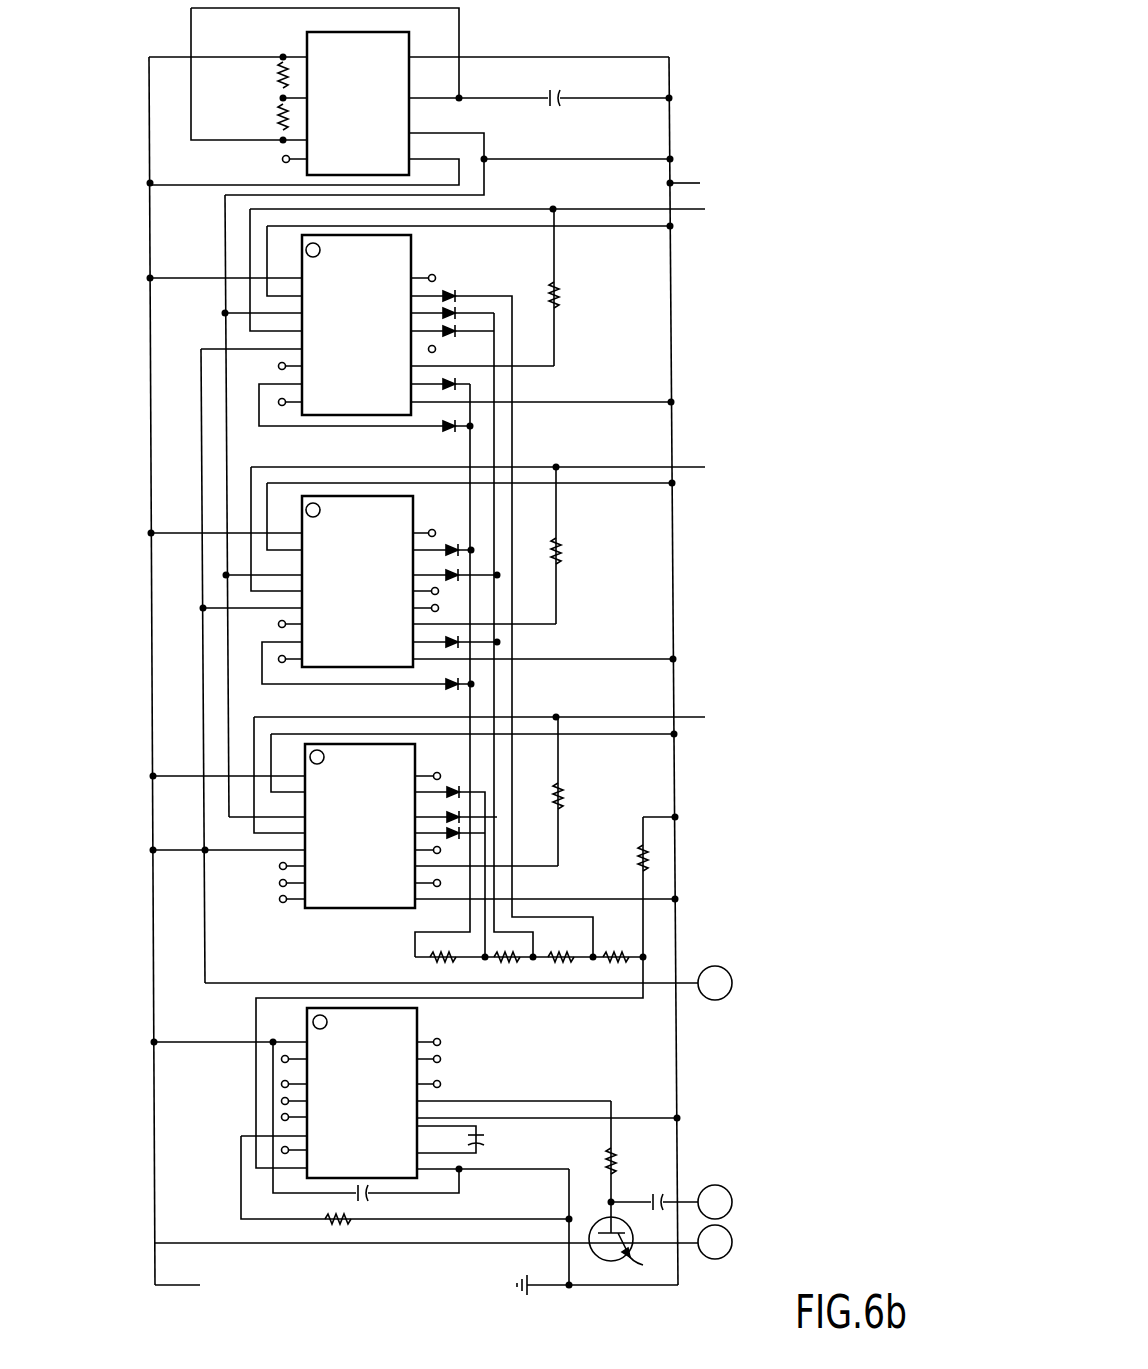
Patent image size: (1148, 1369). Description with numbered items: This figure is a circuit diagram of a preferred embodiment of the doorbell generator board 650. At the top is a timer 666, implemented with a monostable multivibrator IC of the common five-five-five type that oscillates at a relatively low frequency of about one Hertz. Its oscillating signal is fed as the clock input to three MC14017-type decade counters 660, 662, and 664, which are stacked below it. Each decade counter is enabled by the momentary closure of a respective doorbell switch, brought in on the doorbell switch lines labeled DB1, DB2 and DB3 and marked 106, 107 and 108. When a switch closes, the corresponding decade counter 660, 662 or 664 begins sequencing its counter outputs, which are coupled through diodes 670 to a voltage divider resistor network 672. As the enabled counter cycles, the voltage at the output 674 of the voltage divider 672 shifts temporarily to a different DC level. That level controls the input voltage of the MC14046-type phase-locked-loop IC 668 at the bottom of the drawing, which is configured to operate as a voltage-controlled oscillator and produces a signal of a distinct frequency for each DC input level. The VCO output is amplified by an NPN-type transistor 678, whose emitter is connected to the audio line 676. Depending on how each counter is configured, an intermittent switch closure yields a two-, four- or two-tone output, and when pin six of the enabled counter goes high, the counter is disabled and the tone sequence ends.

The doorbell generator board 650 is at (745, 50).
The timer 666 is at (307, 47).
The decade counter 660 is at (355, 418).
The decade counter 662 is at (355, 660).
The decade counter 664 is at (345, 910).
The phase-locked-loop IC 668 is at (413, 1025).
The diodes 670 is at (450, 288).
The voltage divider network 672 is at (545, 950).
The output of the voltage divider 674 is at (645, 955).
The audio line 676 is at (733, 1252).
The transistor 678 is at (611, 1261).
The data bus line DB1 106 is at (745, 213).
The data bus line DB2 107 is at (727, 455).
The data bus line DB3 108 is at (735, 705).